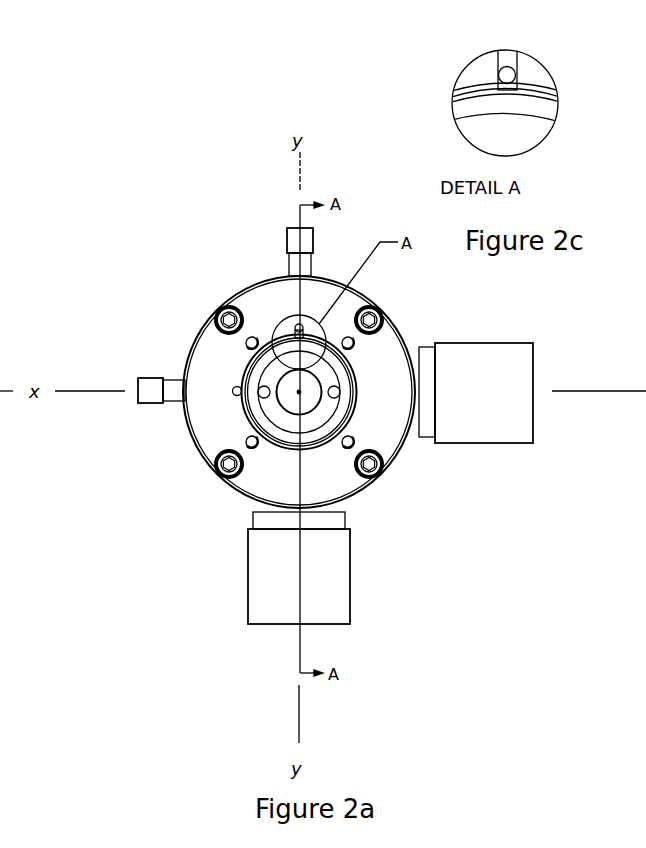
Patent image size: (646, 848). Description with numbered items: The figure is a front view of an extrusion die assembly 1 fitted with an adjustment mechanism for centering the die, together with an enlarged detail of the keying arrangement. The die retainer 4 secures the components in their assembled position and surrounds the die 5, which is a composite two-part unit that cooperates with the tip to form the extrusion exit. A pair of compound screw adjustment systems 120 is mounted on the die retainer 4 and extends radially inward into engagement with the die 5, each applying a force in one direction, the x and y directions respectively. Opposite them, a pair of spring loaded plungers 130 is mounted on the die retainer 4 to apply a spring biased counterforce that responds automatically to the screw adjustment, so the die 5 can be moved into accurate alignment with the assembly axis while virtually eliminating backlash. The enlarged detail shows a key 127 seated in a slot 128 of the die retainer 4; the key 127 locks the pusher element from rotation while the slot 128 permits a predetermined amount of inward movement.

In FIG. 2A, the extrusion die assembly 1 is at (212, 268).
In FIG. 2A, the die retainer 4 is at (193, 438).
In FIG. 2A, the die 5 is at (265, 367).
In FIG. 2A, the compound screw adjustment system 120 is at (286, 253).
In FIG. 2A, the spring loaded plunger 130 is at (472, 447).
In FIG. 2C, the key 127 is at (518, 62).
In FIG. 2C, the slot 128 is at (498, 63).